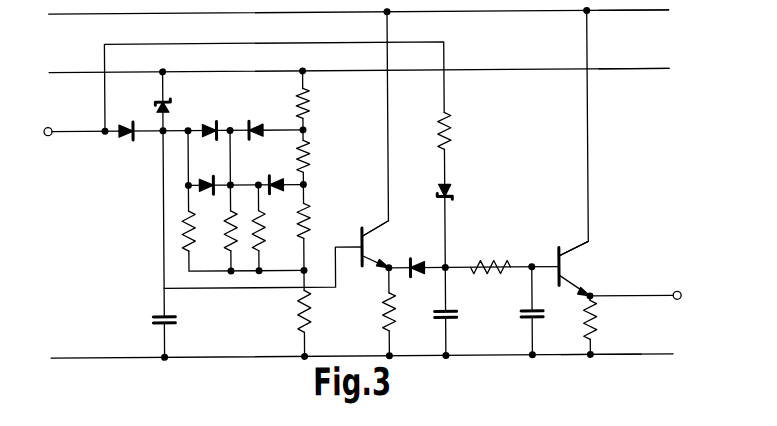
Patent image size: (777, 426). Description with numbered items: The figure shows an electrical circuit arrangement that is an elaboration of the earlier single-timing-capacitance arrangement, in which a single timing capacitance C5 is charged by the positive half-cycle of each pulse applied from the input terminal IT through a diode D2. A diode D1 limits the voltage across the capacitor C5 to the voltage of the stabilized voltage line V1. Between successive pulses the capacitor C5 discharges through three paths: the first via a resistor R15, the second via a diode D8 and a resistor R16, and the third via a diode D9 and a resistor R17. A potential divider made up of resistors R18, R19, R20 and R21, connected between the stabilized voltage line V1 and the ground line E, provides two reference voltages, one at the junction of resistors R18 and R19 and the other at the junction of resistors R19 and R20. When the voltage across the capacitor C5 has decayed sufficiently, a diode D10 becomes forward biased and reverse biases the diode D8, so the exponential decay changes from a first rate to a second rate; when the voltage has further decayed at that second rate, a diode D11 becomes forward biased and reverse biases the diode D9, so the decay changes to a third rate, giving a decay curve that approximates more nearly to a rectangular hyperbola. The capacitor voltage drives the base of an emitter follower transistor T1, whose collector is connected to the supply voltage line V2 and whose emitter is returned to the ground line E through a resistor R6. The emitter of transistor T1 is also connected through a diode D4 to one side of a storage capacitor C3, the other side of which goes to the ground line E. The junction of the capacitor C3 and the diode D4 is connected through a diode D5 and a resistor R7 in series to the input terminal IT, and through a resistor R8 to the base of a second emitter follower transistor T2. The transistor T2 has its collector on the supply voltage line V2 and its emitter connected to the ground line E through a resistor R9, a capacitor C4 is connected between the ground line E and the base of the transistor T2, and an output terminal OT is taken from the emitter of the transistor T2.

The input terminal IT is at (56, 115).
The output terminal OT is at (680, 281).
The ground line E is at (600, 356).
The stabilized voltage line V1 is at (634, 55).
The supply voltage line V2 is at (634, 7).
The diode D1 is at (167, 100).
The diode D2 is at (129, 120).
The diode D4 is at (414, 262).
The diode D5 is at (454, 194).
The diode D8 is at (207, 123).
The diode D9 is at (203, 178).
The diode D10 is at (263, 110).
The diode D11 is at (270, 178).
The resistor R6 is at (418, 320).
The resistor R7 is at (448, 150).
The resistor R8 is at (483, 260).
The resistor R9 is at (597, 339).
The resistor R15 is at (192, 228).
The resistor R16 is at (230, 237).
The resistor R17 is at (260, 240).
The resistor R18 is at (305, 119).
The resistor R19 is at (307, 170).
The resistor R20 is at (307, 232).
The resistor R21 is at (308, 330).
The storage capacitor C3 is at (470, 305).
The capacitor C4 is at (523, 313).
The timing capacitance C5 is at (154, 317).
The emitter follower transistor T1 is at (380, 244).
The second emitter follower transistor T2 is at (563, 268).